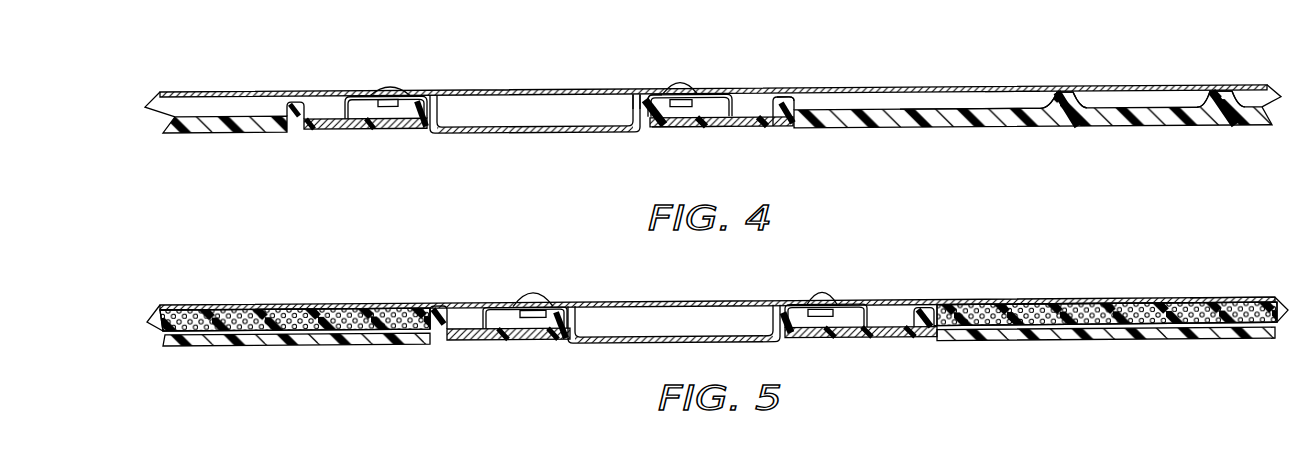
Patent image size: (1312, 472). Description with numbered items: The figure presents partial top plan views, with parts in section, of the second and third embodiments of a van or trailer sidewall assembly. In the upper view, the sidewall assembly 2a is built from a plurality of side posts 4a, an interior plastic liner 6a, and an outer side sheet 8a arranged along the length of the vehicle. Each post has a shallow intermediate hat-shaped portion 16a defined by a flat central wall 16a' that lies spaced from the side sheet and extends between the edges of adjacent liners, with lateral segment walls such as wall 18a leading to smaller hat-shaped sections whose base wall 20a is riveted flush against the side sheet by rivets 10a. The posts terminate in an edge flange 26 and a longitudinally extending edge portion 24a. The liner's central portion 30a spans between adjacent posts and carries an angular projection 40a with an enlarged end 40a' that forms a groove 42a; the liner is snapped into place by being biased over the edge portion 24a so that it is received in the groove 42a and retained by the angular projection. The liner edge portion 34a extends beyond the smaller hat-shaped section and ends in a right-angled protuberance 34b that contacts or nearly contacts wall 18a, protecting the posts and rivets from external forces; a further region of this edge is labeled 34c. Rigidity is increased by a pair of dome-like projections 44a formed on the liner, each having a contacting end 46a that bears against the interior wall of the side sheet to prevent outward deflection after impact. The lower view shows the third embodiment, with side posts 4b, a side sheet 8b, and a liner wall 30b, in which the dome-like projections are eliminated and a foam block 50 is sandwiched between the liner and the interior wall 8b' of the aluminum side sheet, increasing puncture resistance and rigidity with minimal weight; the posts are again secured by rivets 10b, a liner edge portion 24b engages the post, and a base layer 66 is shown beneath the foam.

In FIG. 4, the sidewall assembly 2a is at (473, 90).
In FIG. 4, the side posts 4a is at (598, 140).
In FIG. 4, the interior plastic liner 6a is at (1010, 113).
In FIG. 4, the outer side sheet 8a is at (1025, 85).
In FIG. 4, the rivets 10a is at (668, 82).
In FIG. 4, the intermediate hat-shaped portion 16a is at (527, 133).
In FIG. 4, the flat central wall 16a' is at (535, 132).
In FIG. 4, the lateral segment wall 18a is at (631, 112).
In FIG. 4, the base wall 20a is at (370, 93).
In FIG. 4, the edge portion 24a is at (333, 128).
In FIG. 4, the central portion of liner 30a is at (200, 128).
In FIG. 4, the edge portion of liner 34a is at (698, 127).
In FIG. 4, the protuberance 34b is at (639, 122).
In FIG. 4, the conductor upper portion 34c is at (651, 100).
In FIG. 4, the angular projection 40a is at (281, 92).
In FIG. 4, the enlarged end 40a' is at (808, 90).
In FIG. 4, the groove 42a is at (789, 104).
In FIG. 4, the dome-like projections 44a is at (1077, 92).
In FIG. 4, the contacting end 46a is at (1070, 93).
In FIG. 5, the edge flange 26 is at (498, 297).
In FIG. 5, the foam block 50 is at (265, 313).
In FIG. 5, the base layer 66 is at (263, 338).
In FIG. 5, the side posts 4b is at (630, 346).
In FIG. 5, the side sheet 8b is at (717, 302).
In FIG. 5, the interior wall of side sheet 8b' is at (1232, 284).
In FIG. 5, the electronic component 10b is at (818, 294).
In FIG. 5, the conductive layer 24b is at (888, 330).
In FIG. 5, the wall of liner 30b is at (1198, 332).